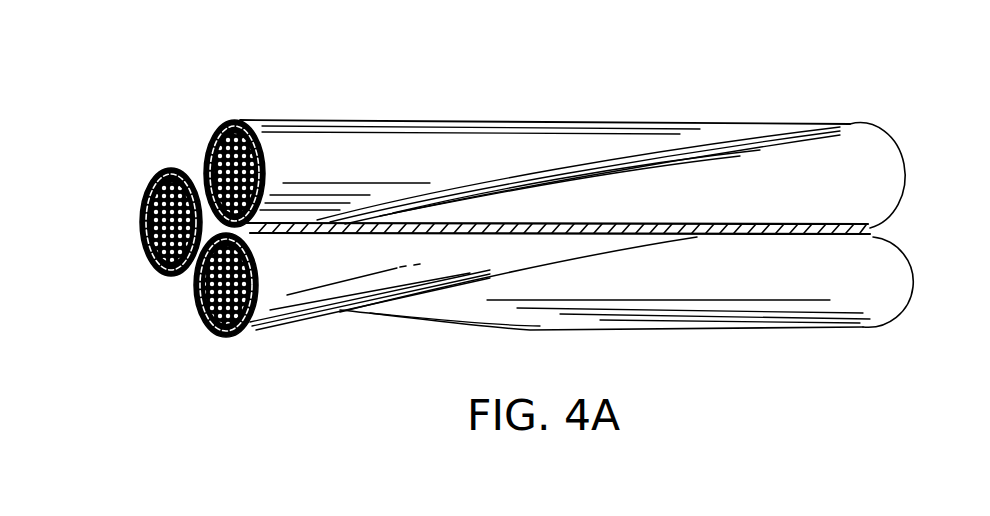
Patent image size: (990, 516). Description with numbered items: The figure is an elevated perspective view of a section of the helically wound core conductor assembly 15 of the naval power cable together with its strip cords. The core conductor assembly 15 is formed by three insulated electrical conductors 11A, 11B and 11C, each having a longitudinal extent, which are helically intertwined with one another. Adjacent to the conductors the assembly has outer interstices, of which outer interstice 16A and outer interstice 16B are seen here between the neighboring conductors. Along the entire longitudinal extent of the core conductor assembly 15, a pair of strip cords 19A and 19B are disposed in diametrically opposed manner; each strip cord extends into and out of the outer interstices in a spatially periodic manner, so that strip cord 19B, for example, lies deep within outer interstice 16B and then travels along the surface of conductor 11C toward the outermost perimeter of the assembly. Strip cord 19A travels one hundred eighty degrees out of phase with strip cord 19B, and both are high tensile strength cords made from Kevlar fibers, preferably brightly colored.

The electrical conductor 11A is at (510, 322).
The electrical conductor 11B is at (323, 132).
The electrical conductor 11C is at (840, 150).
The core conductor assembly 15 is at (124, 292).
The outer interstice 16A is at (864, 251).
The outer interstice 16B is at (420, 190).
The strip cord 19A is at (190, 280).
The strip cord 19B is at (490, 222).